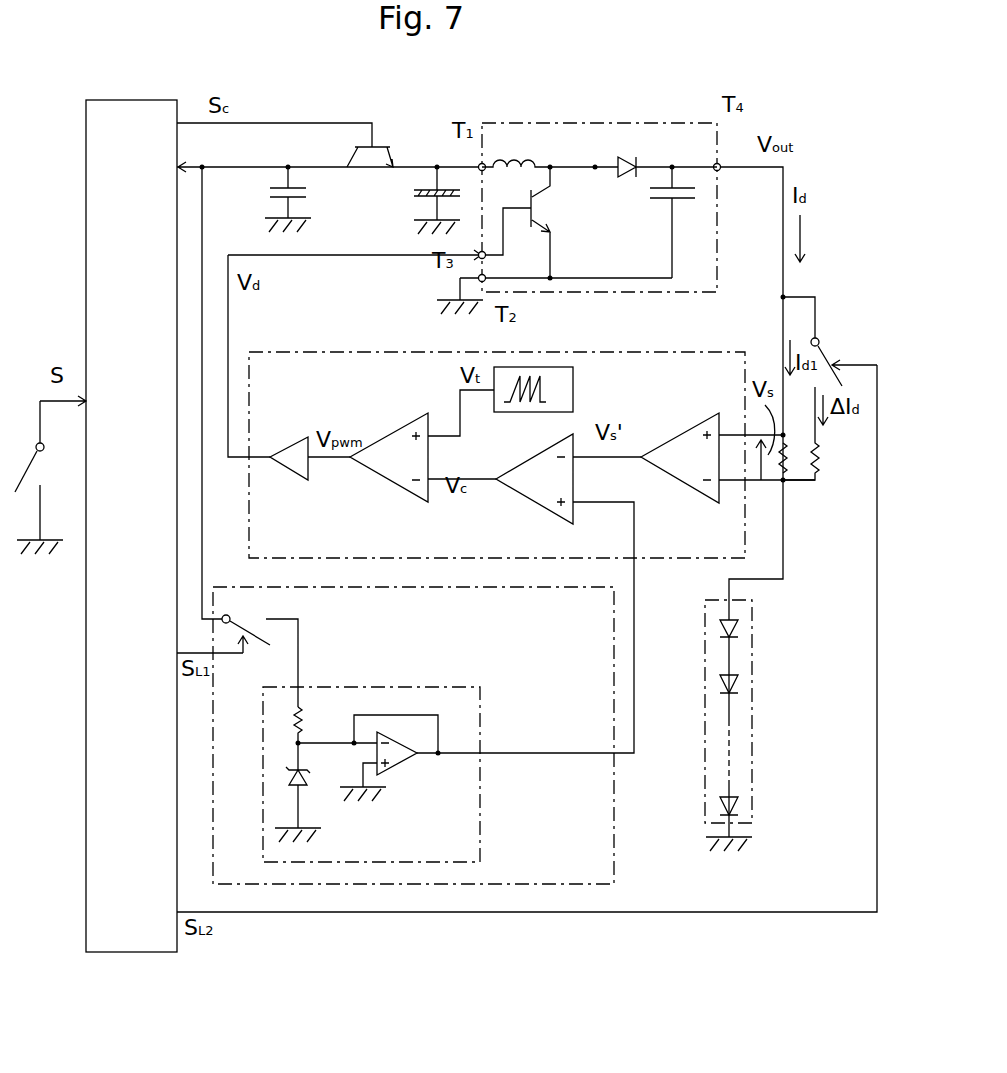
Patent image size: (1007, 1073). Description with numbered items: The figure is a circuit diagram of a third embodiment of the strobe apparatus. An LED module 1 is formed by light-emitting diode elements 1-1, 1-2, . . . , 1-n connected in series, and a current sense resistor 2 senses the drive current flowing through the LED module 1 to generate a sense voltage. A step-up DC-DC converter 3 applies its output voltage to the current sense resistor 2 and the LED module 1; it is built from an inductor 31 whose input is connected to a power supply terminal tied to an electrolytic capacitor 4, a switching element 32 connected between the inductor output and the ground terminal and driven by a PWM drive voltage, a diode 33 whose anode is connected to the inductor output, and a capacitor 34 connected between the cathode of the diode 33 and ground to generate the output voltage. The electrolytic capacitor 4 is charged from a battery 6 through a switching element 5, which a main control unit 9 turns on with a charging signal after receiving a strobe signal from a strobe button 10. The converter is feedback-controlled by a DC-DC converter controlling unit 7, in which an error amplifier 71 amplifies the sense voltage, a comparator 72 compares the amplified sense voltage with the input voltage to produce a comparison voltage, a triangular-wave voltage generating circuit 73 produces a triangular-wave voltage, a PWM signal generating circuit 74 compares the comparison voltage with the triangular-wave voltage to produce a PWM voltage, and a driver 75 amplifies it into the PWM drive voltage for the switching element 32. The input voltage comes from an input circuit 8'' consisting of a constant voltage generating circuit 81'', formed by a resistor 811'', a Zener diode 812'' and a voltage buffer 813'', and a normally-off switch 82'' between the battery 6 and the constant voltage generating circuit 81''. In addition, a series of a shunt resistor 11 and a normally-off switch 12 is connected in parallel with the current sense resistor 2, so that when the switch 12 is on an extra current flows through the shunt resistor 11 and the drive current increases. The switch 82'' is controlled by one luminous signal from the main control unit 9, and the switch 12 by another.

The main control unit 9 is at (122, 100).
The switching element 5 is at (372, 147).
The battery 6 is at (276, 188).
The electrolytic capacitor 4 is at (414, 190).
The step-up DC-DC converter 3 is at (600, 180).
The inductor 31 is at (515, 160).
The switching element 32 is at (537, 200).
The diode 33 is at (632, 160).
The capacitor 34 is at (662, 196).
The normally-off switch 12 is at (820, 338).
The current sense resistor 2 is at (788, 483).
The shunt resistor 11 is at (820, 460).
The DC-DC converter controlling unit 7 is at (497, 431).
The error amplifier 71 is at (665, 447).
The comparator 72 is at (540, 450).
The triangular-wave voltage generating circuit 73 is at (573, 392).
The PWM signal generating circuit 74 is at (385, 440).
The driver 75 is at (283, 448).
The input circuit 8'' is at (438, 735).
The normally-off switch 82'' is at (293, 651).
The constant voltage generating circuit 81'' is at (371, 733).
The resistor 811'' is at (345, 704).
The Zener diode 812'' is at (343, 808).
The voltage buffer 813'' is at (412, 782).
The LED module 1 is at (751, 722).
The light-emitting diode element 1-1 is at (733, 625).
The light-emitting diode element 1-2 is at (733, 683).
The light-emitting diode element 1-n is at (733, 803).
The strobe button 10 is at (30, 468).